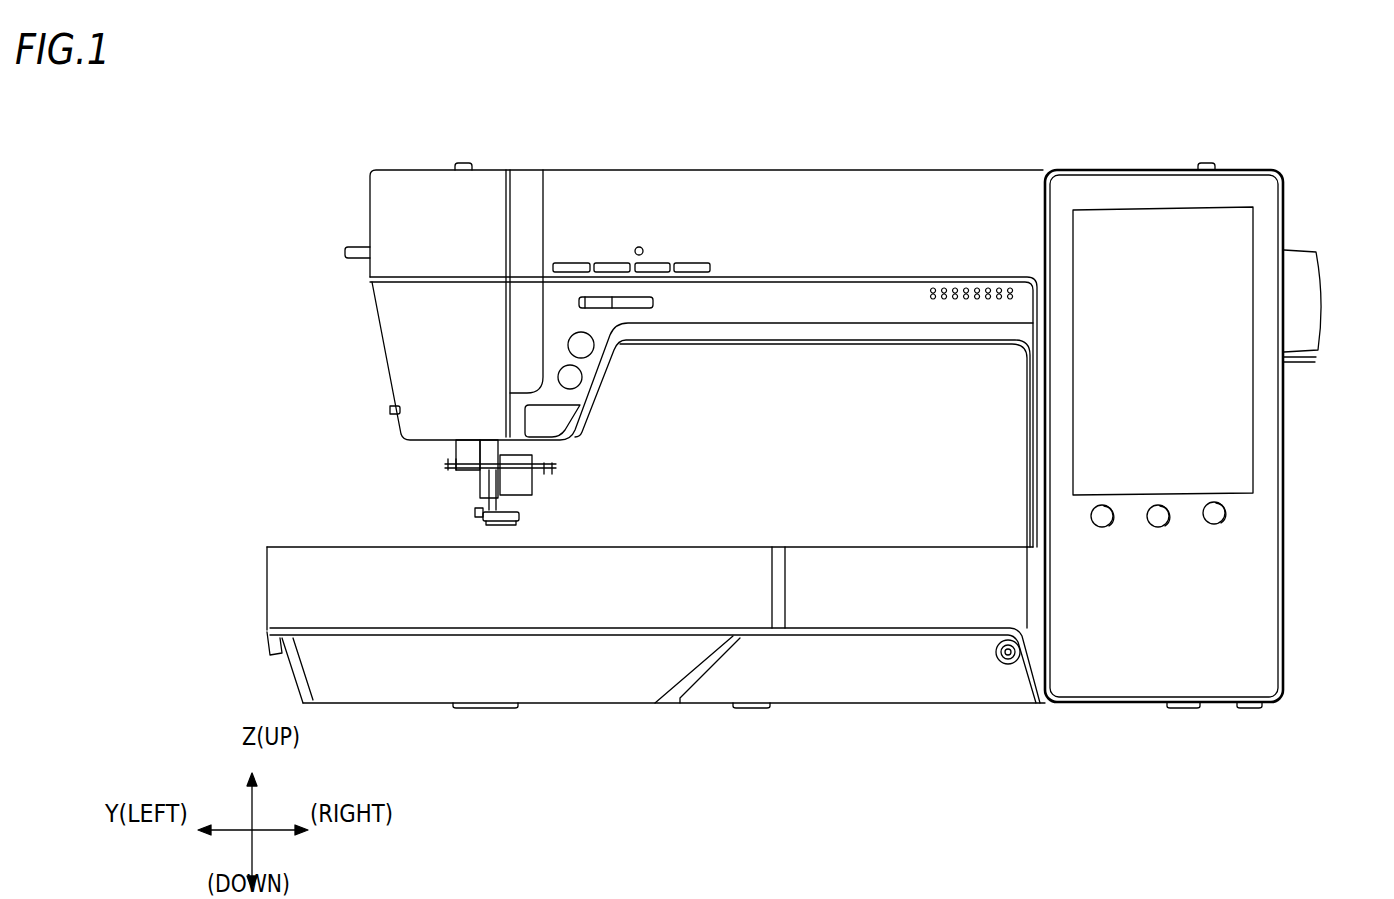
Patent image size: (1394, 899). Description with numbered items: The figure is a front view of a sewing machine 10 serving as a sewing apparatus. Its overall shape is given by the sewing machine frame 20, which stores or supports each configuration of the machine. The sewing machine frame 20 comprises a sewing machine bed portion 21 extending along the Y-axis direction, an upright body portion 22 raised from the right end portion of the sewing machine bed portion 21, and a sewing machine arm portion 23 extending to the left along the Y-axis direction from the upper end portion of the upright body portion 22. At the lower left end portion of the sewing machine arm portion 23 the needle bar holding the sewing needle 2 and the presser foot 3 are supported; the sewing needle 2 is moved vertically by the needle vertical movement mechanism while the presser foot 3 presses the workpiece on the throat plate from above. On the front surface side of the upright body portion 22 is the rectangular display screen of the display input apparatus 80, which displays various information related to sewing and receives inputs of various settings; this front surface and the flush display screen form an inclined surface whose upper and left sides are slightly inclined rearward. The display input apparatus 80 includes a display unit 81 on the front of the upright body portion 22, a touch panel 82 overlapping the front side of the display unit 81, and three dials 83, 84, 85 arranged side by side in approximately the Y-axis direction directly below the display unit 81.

The sewing machine 10 is at (397, 79).
The sewing machine frame 20 is at (1062, 768).
The sewing machine bed portion 21 is at (580, 703).
The upright body portion 22 is at (1285, 664).
The sewing machine arm portion 23 is at (750, 170).
The sewing needle 2 is at (510, 508).
The presser foot 3 is at (512, 523).
The display input apparatus 80 is at (1310, 157).
The display unit 81 is at (1252, 240).
The touch panel 82 is at (1163, 351).
The dial 83 is at (1113, 527).
The dial 84 is at (1170, 525).
The dial 85 is at (1232, 517).